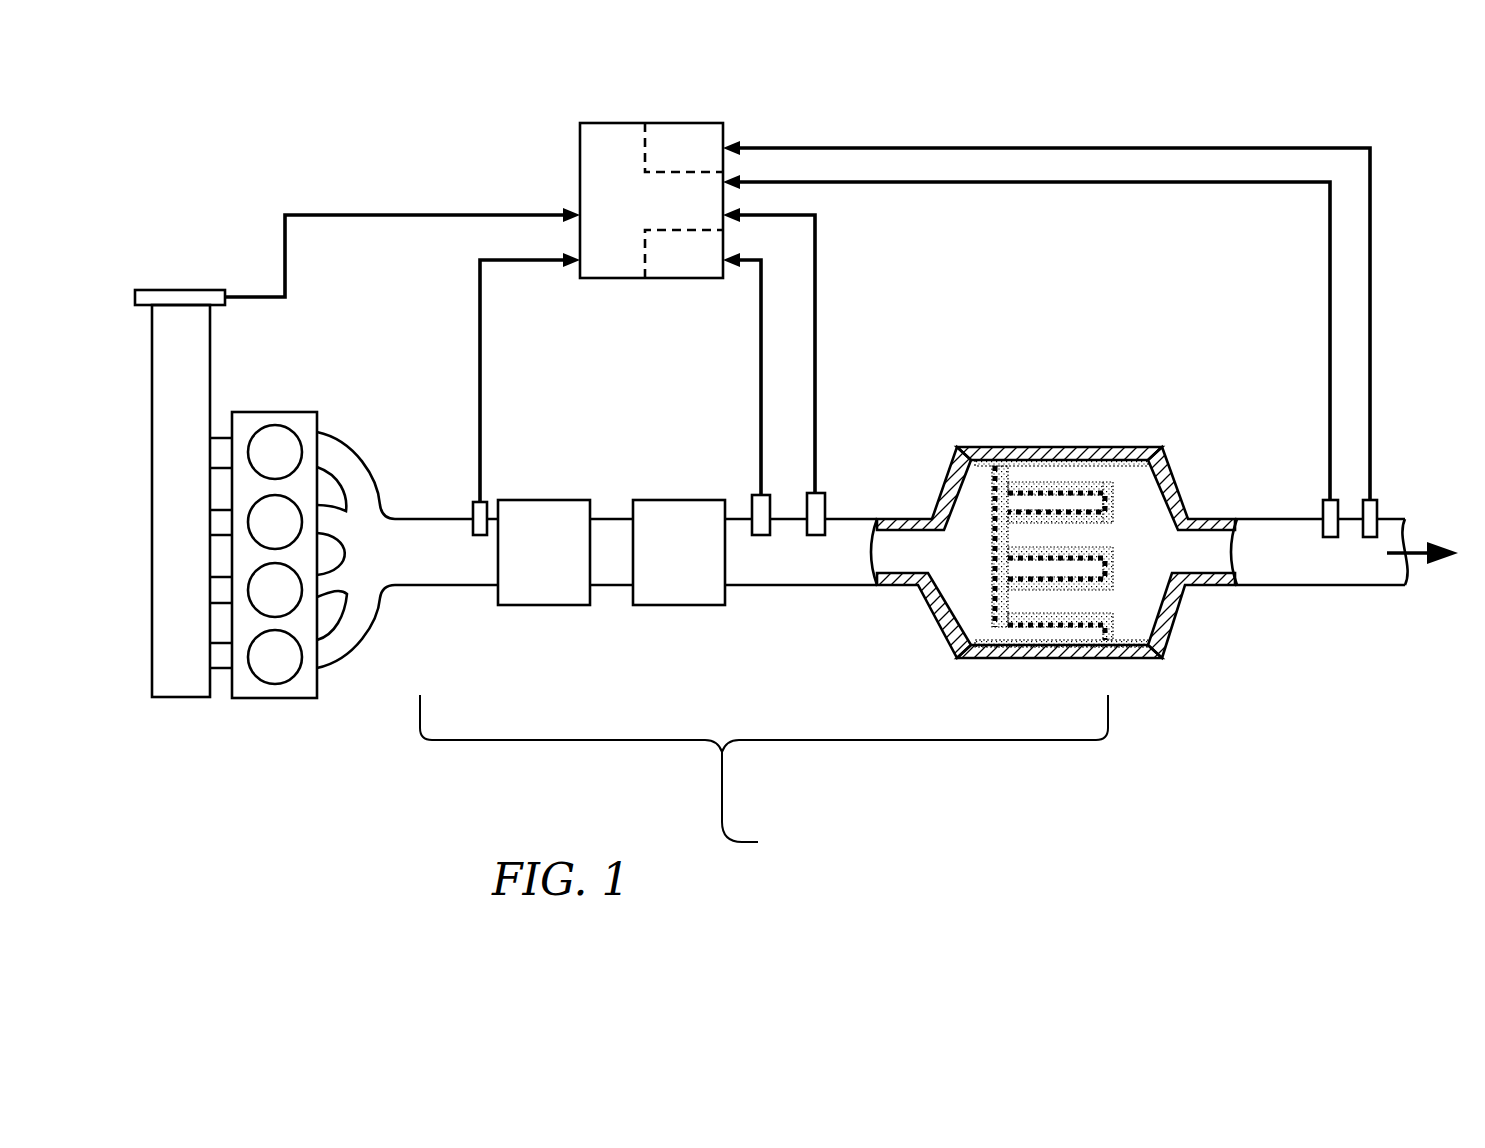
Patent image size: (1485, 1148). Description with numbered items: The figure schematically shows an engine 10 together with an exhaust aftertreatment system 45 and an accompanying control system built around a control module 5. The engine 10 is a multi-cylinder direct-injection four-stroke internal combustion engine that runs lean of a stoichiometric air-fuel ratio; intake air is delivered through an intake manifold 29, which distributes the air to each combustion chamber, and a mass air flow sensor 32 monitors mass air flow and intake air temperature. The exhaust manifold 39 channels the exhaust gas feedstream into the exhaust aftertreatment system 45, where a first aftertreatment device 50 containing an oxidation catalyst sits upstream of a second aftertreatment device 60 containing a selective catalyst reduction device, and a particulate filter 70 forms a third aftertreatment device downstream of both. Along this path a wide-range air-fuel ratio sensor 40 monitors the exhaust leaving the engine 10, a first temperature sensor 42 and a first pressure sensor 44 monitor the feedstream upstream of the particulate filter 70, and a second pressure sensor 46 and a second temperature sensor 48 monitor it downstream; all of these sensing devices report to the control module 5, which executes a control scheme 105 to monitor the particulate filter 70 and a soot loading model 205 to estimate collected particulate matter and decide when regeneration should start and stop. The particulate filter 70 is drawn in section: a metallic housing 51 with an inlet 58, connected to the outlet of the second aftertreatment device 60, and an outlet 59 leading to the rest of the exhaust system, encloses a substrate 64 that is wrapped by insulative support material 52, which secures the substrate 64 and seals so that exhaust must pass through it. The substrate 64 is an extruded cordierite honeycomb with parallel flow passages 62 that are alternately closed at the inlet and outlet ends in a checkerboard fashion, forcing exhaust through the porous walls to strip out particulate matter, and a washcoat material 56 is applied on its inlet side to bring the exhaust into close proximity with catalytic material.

The control module 5 is at (651, 200).
The soot loading model 205 is at (684, 147).
The control scheme 105 is at (684, 254).
The engine 10 is at (264, 403).
The intake manifold 29 is at (182, 675).
The mass air flow sensor 32 is at (225, 300).
The exhaust manifold 39 is at (338, 462).
The wide-range air-fuel ratio sensor 40 is at (473, 505).
The first temperature sensor 42 is at (752, 503).
The first pressure sensor 44 is at (826, 503).
The second pressure sensor 46 is at (1323, 506).
The second temperature sensor 48 is at (1377, 506).
The first aftertreatment device 50 is at (544, 552).
The second aftertreatment device 60 is at (679, 552).
The particulate filter 70 is at (1047, 521).
The metallic housing 51 is at (933, 507).
The insulative support material 52 is at (1125, 463).
The washcoat material 56 is at (982, 604).
The inlet 58 is at (897, 552).
The outlet 59 is at (1212, 552).
The flow passages 62 is at (1060, 470).
The substrate 64 is at (1113, 497).
The exhaust aftertreatment system 45 is at (764, 777).